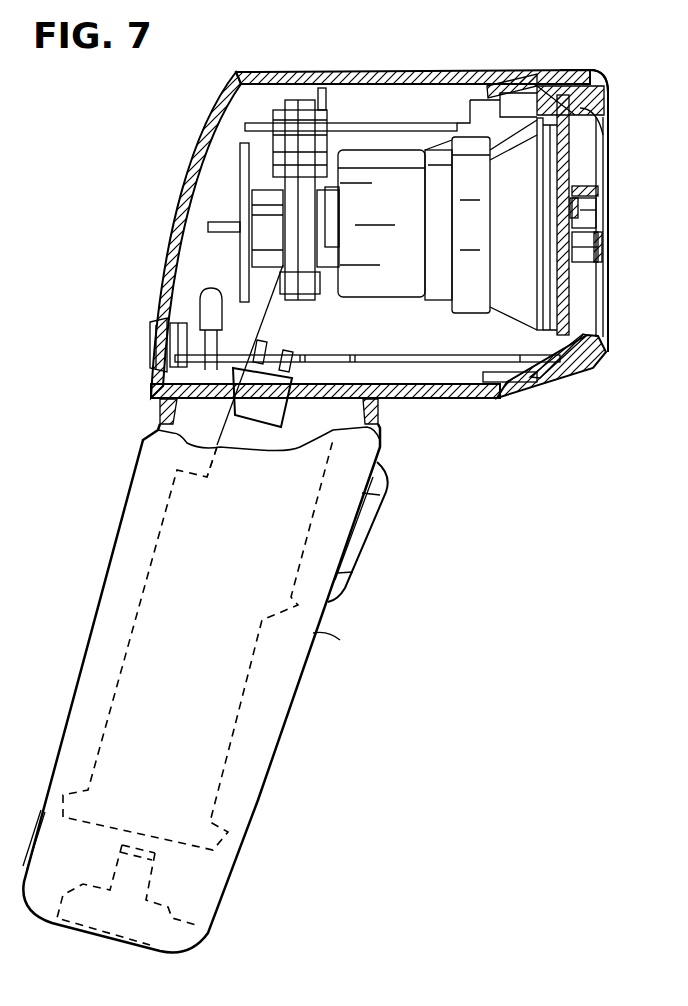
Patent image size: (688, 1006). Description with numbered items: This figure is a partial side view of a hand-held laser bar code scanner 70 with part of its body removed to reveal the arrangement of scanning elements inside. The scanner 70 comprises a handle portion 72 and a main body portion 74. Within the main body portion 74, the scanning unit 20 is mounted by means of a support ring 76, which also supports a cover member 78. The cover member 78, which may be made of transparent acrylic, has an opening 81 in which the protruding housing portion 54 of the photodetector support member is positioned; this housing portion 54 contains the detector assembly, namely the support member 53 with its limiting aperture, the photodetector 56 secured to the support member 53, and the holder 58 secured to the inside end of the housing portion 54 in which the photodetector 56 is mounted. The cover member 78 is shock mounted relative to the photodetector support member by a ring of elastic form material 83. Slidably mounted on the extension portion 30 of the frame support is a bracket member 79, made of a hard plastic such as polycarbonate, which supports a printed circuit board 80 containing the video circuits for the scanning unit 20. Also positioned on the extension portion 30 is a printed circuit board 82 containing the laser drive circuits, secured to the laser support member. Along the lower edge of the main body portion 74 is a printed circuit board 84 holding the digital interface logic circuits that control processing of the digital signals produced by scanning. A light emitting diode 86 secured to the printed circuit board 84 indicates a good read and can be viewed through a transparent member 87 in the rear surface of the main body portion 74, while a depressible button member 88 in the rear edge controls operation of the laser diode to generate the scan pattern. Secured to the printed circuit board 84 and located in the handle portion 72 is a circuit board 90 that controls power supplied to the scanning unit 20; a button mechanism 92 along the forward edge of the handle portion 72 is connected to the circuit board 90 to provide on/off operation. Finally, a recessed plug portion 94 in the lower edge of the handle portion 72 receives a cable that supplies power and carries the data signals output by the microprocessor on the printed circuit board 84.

The hand-held scanner 70 is at (124, 161).
The handle portion 72 is at (318, 630).
The main body portion 74 is at (360, 68).
The support ring 76 is at (507, 97).
The cover member 78 is at (590, 82).
The bracket member 79 is at (284, 295).
The printed circuit board 80 is at (418, 123).
The opening 81 is at (592, 108).
The printed circuit board 82 is at (240, 152).
The ring of elastic form material 83 is at (570, 97).
The printed circuit board 84 is at (383, 356).
The light emitting diode 86 is at (200, 300).
The transparent member 87 is at (200, 291).
The depressible button member 88 is at (152, 352).
The circuit board 90 is at (233, 733).
The button mechanism 92 is at (368, 517).
The recessed plug portion 94 is at (200, 926).
The scanning unit 20 is at (398, 274).
The extension portion 30 is at (327, 270).
The support member 53 is at (560, 212).
The housing portion 54 is at (590, 189).
The photodetector 56 is at (575, 216).
The holder 58 is at (595, 243).